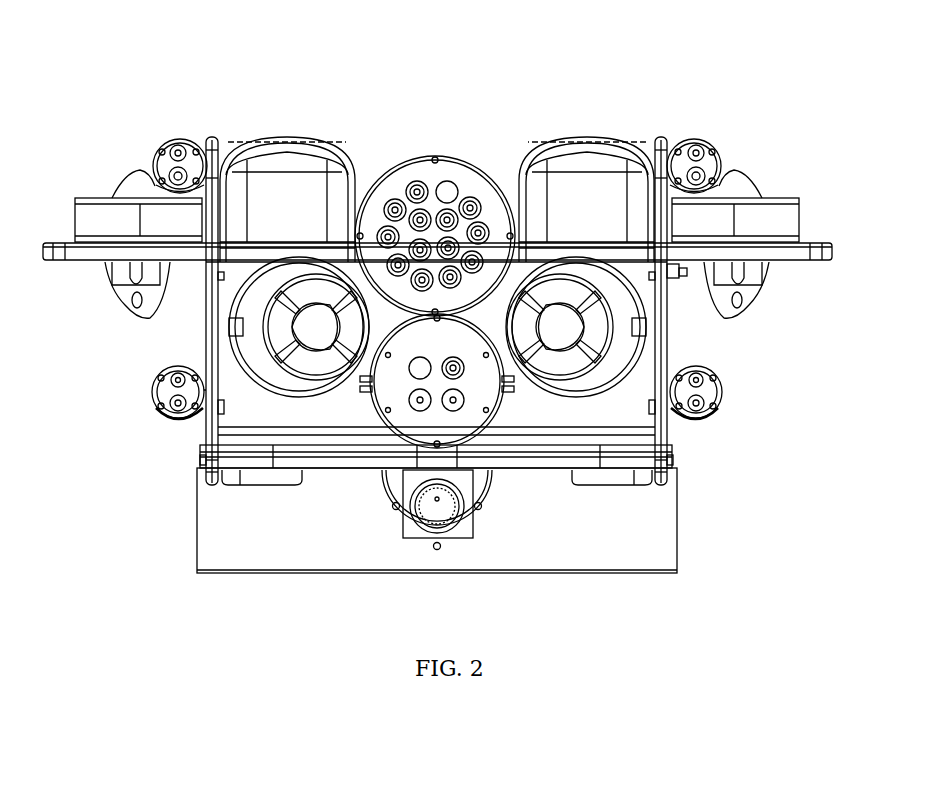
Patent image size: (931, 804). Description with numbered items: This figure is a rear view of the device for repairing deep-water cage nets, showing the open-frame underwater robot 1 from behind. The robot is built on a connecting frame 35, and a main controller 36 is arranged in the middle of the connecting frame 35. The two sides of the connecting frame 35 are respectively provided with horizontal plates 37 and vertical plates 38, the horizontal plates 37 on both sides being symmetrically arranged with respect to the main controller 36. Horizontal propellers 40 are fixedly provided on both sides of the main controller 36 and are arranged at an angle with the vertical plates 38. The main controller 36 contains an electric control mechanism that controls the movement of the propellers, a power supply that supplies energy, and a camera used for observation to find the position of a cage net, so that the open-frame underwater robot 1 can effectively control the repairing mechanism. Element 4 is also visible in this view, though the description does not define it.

The open-frame underwater robot 1 is at (287, 175).
The main controller 36 is at (491, 186).
The vertical plate 38 is at (650, 157).
The horizontal plate 37 is at (763, 250).
The connecting frame 35 is at (677, 272).
The horizontal propeller 40 is at (262, 372).
The base housing 4 is at (538, 514).